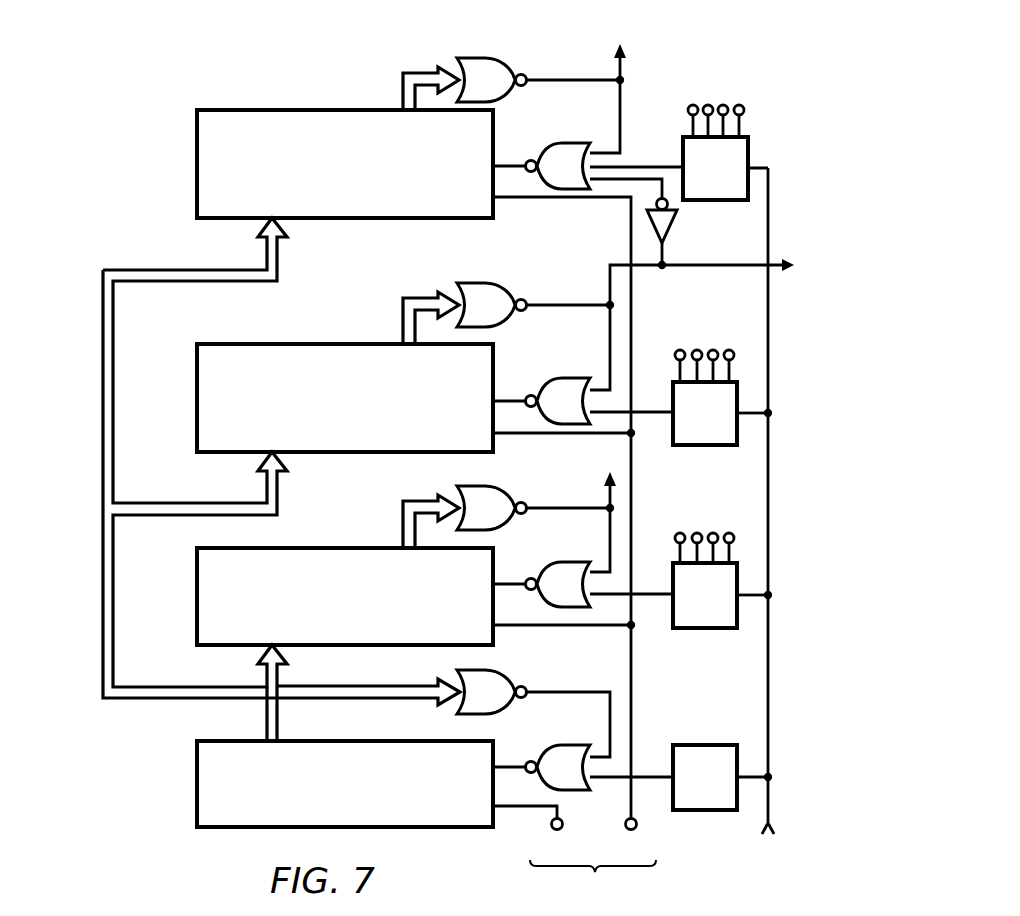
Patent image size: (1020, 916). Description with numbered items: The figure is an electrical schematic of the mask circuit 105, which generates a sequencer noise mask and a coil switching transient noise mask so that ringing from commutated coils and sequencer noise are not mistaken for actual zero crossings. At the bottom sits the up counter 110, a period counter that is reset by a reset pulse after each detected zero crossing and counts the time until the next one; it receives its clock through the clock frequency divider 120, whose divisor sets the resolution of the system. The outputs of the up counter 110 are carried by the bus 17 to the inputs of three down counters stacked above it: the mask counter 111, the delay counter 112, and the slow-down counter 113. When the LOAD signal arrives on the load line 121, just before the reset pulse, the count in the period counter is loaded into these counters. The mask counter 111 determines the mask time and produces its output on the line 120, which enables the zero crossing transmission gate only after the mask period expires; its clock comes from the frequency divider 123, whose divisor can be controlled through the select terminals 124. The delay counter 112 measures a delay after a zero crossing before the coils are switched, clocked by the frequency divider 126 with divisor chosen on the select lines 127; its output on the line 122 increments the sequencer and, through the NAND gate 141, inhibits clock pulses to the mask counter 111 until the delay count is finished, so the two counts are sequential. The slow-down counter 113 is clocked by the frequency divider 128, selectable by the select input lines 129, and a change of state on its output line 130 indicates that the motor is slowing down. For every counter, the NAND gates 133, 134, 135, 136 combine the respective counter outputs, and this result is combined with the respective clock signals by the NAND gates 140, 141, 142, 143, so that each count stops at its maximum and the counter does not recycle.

The mask circuit 105 is at (338, 70).
The input bus 17 is at (96, 258).
The up counter 110 is at (197, 803).
The mask counter 111 is at (197, 168).
The delay counter 112 is at (197, 403).
The slow-down counter 113 is at (197, 618).
The clock frequency divider 120 is at (624, 58).
The load line 121 is at (630, 240).
The delay counter output line 122 is at (608, 282).
The frequency divider 123 is at (718, 200).
The select terminals 124 is at (770, 142).
The frequency divider 126 is at (737, 427).
The select lines 127 is at (770, 370).
The frequency divider 128 is at (737, 610).
The select input lines 129 is at (770, 553).
The slow-down output line 130 is at (607, 491).
The NAND gate 133 is at (503, 680).
The NAND gate 134 is at (470, 57).
The NAND gate 135 is at (470, 282).
The NAND gate 136 is at (505, 525).
The NAND gate 140 is at (580, 745).
The NAND gate 141 is at (580, 143).
The NAND gate 142 is at (578, 378).
The NAND gate 143 is at (578, 607).